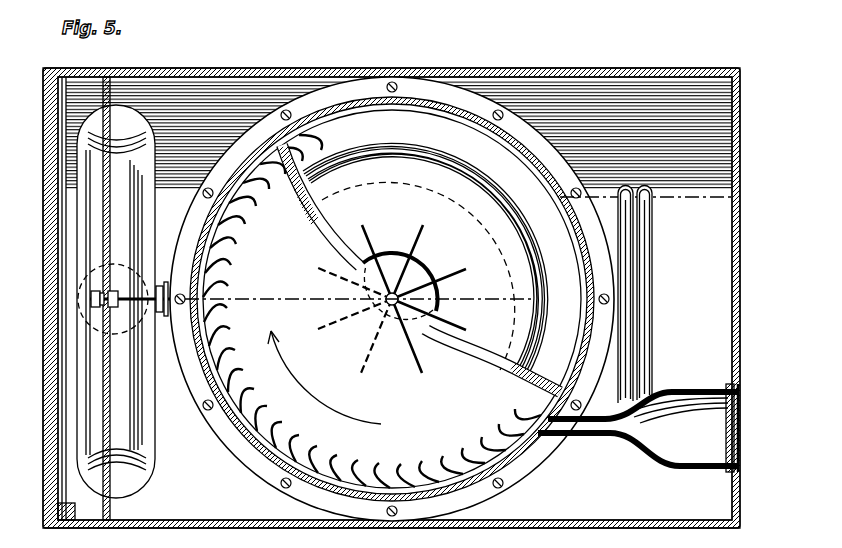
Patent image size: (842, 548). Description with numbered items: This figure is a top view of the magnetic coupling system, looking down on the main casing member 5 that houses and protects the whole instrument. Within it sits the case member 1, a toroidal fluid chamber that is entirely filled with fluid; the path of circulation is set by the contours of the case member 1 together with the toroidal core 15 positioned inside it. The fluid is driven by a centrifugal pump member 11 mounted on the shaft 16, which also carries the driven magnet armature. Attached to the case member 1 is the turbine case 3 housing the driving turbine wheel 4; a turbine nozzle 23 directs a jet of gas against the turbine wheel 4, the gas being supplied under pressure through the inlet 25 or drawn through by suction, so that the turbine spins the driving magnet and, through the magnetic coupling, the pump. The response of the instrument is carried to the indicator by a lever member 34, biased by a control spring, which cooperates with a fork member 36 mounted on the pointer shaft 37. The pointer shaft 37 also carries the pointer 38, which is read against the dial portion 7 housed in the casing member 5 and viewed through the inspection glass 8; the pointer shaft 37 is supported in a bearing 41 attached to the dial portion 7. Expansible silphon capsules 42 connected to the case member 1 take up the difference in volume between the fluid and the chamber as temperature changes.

The case member 1 is at (582, 249).
The turbine case 3 is at (278, 465).
The driving turbine wheel 4 is at (245, 427).
The main casing member 5 is at (625, 71).
The dial portion 7 is at (118, 108).
The inspection glass 8 is at (52, 173).
The centrifugal pump member 11 is at (418, 248).
The toroidal core 15 is at (425, 260).
The shaft 16 is at (388, 312).
The turbine nozzle 23 is at (596, 437).
The inlet 25 is at (712, 470).
The lever member 34 is at (482, 303).
The fork member 36 is at (160, 308).
The pointer shaft 37 is at (91, 299).
The pointer 38 is at (100, 302).
The bearing 41 is at (113, 297).
The expansible silphon capsules 42 is at (654, 277).